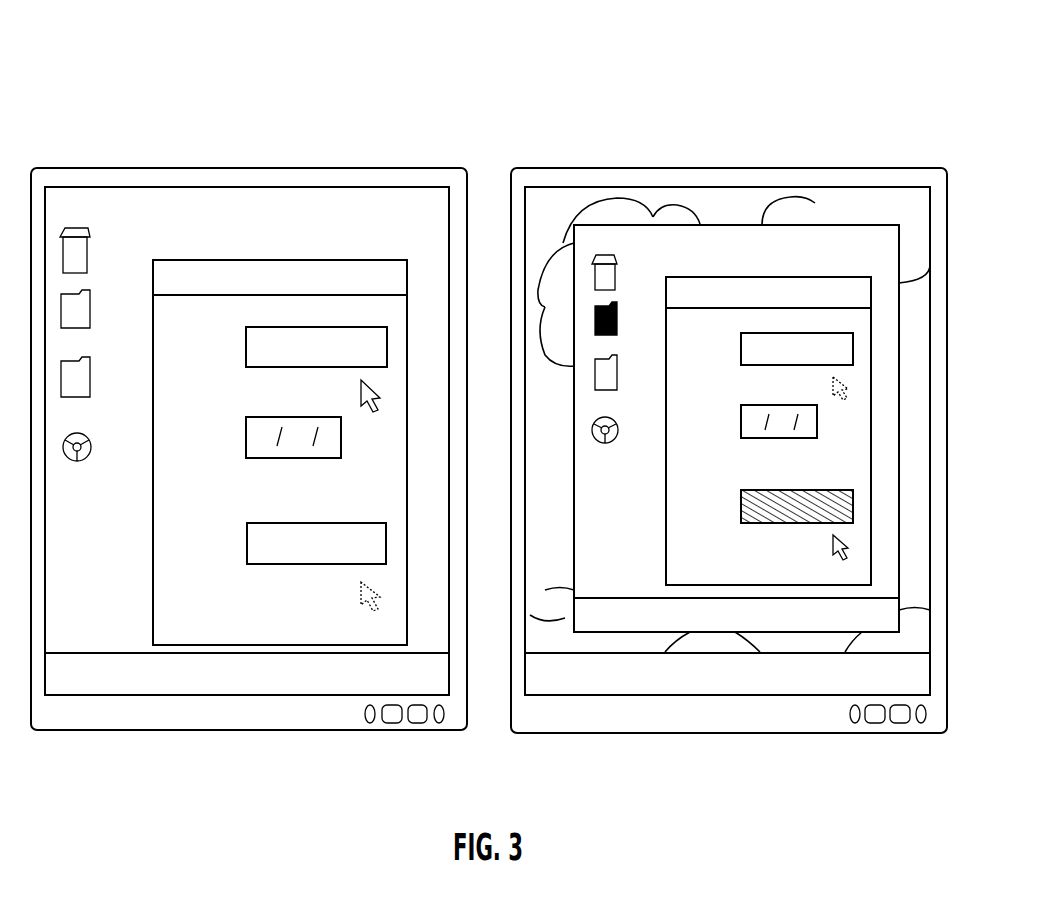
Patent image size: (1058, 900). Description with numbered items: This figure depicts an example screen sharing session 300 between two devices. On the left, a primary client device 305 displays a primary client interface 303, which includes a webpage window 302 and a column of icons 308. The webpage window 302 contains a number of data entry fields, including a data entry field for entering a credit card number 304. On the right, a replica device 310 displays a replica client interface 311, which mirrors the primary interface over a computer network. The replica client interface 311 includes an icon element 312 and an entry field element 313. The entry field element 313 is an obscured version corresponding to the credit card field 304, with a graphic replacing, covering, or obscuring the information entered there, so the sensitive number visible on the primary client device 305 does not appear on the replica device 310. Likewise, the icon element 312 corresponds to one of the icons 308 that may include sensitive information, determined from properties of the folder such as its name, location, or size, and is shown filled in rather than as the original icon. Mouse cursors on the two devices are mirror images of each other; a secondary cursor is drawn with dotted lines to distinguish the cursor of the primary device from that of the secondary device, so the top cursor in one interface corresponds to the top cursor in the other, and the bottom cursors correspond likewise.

The screen sharing session 300 is at (502, 52).
The webpage window 302 is at (383, 259).
The primary client interface 303 is at (310, 186).
The data entry field for entering a credit card number 304 is at (359, 522).
The primary client device 305 is at (138, 138).
The icons 308 is at (95, 222).
The replica device 310 is at (620, 138).
The replica client interface 311 is at (791, 186).
The icon element 312 is at (620, 312).
The entry field element 313 is at (831, 490).